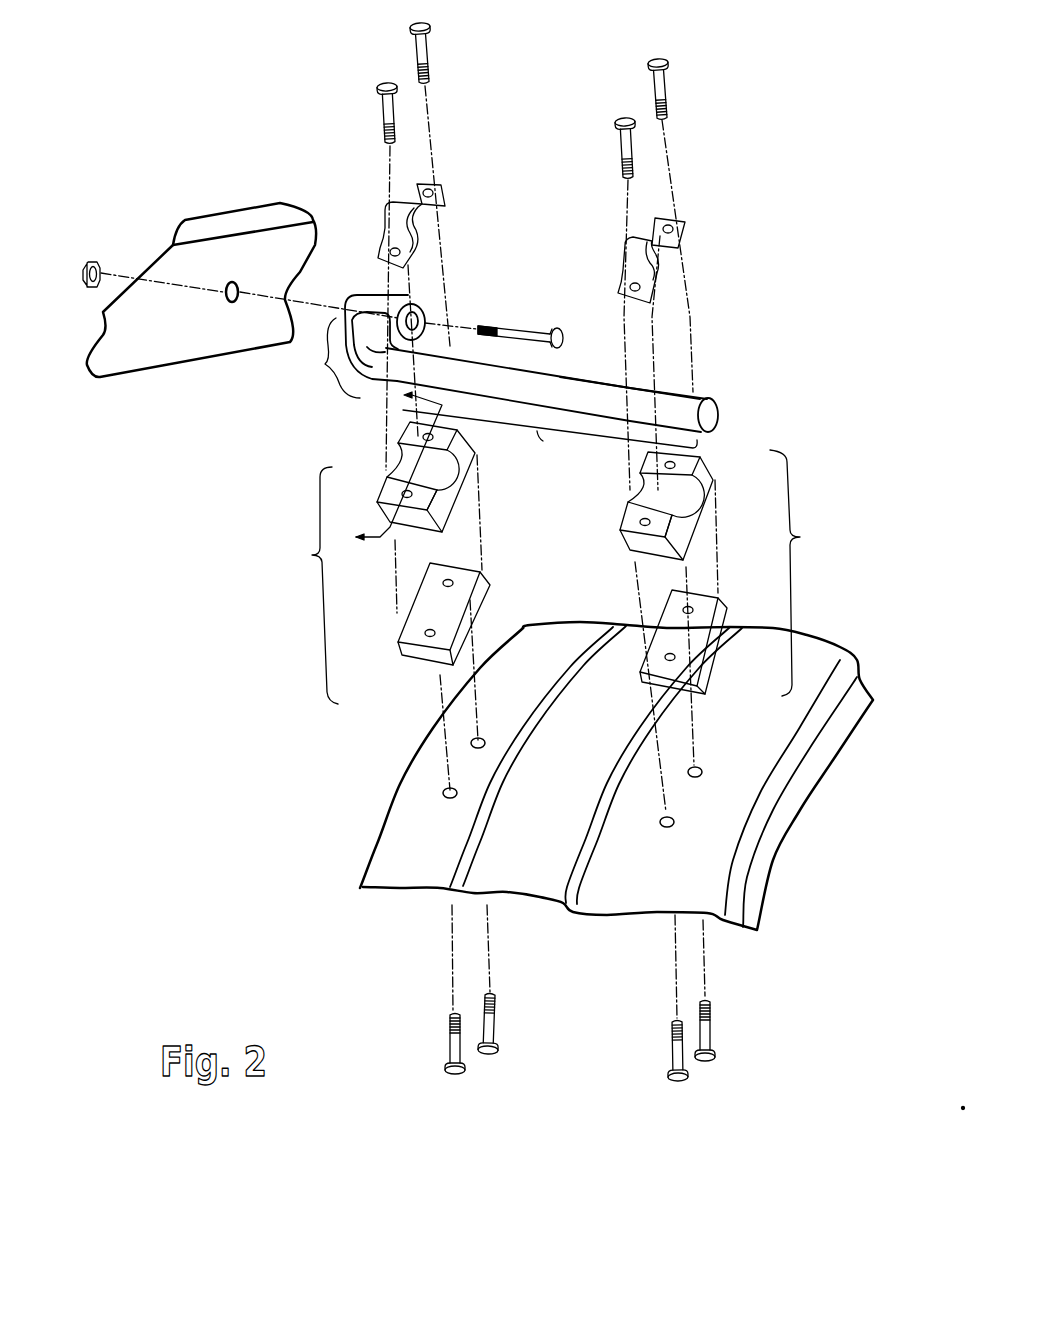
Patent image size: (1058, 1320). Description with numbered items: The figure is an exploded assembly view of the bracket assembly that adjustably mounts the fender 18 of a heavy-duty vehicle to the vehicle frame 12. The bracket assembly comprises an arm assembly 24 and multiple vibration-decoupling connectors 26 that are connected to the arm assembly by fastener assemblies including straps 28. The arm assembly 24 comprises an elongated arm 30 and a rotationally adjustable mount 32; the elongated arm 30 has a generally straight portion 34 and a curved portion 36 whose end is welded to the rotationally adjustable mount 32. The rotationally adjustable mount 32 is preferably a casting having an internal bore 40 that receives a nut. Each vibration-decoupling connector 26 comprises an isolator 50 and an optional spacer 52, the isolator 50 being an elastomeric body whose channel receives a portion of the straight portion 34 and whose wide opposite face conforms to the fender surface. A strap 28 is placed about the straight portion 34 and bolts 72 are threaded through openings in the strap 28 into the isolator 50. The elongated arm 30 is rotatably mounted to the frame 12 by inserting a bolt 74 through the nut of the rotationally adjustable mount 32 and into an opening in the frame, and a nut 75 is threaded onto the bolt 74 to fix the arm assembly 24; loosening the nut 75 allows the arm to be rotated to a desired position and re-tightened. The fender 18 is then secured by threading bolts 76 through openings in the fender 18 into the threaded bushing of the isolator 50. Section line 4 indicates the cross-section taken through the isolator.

The section line 4- 4 is at (385, 462).
The frame 12 is at (212, 222).
The fender 18 is at (797, 813).
The arm assembly 24 is at (537, 342).
The vibration-decoupling connectors 26 is at (556, 563).
The strap 28 is at (443, 186).
The elongated arm 30 is at (683, 392).
The rotationally adjustable mount 32 is at (362, 290).
The straight portion 34 is at (550, 439).
The curved portion 36 is at (331, 358).
The internal bore 40 is at (417, 320).
The isolator 50 is at (476, 459).
The spacer 52 is at (481, 587).
The bolts 72 is at (410, 26).
The bolt 74 is at (520, 325).
The nut 75 is at (88, 261).
The bolts 76 is at (502, 1048).